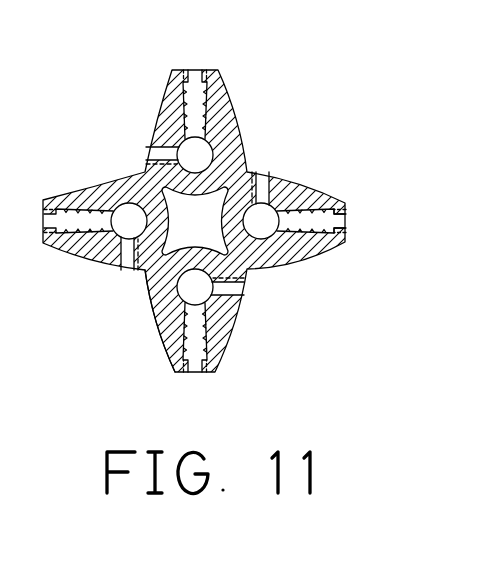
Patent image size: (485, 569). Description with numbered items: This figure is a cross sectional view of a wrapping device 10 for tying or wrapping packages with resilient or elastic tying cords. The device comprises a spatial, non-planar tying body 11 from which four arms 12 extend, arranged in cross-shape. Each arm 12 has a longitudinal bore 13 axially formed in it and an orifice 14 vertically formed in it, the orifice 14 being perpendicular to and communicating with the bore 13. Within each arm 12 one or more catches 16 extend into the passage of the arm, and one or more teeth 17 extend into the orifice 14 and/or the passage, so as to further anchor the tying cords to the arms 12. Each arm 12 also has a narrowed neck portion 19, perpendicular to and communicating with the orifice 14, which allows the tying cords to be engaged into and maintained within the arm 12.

The wrapping device 10 is at (242, 284).
The tying body 11 is at (251, 160).
The arm 12 is at (85, 188).
The longitudinal bore 13 is at (308, 233).
The orifice 14 is at (265, 233).
The catch 16 is at (347, 232).
The tooth 17 is at (162, 347).
The narrowed neck portion 19 is at (128, 268).